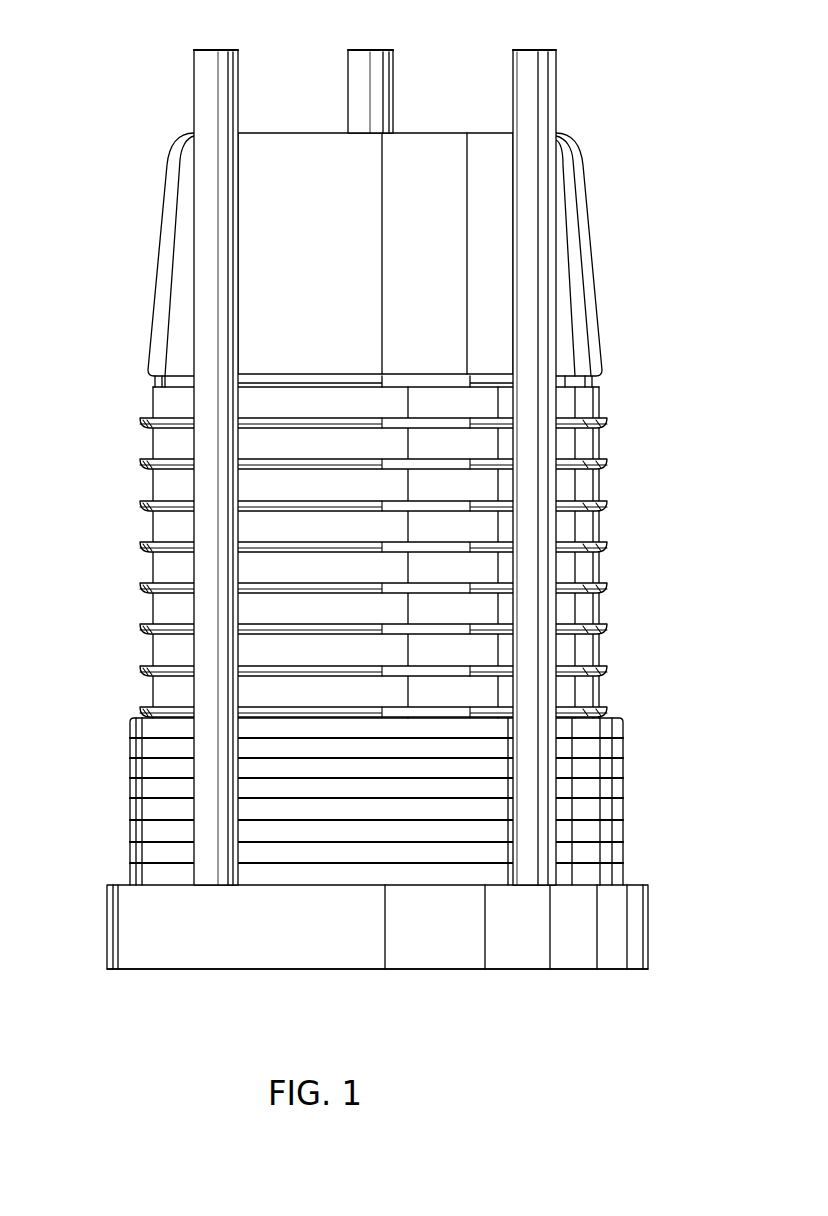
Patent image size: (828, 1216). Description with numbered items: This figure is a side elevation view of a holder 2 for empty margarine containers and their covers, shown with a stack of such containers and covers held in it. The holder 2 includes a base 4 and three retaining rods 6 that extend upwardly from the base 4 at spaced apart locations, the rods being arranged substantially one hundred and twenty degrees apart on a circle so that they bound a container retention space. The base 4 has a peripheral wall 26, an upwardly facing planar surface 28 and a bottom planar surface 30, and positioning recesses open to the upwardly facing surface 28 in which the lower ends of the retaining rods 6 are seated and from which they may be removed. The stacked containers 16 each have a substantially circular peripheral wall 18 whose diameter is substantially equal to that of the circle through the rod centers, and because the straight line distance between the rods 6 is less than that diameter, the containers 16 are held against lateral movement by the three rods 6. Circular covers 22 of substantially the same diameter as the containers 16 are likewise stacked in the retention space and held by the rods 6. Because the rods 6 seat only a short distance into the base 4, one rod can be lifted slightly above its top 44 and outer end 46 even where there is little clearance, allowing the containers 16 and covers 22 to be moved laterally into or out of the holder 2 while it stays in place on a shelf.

The holder 2 is at (382, 914).
The base 4 is at (113, 885).
The retaining rods 6 is at (369, 446).
The containers 16 is at (600, 331).
The peripheral wall 18 is at (586, 252).
The circular covers 22 is at (130, 768).
The peripheral wall 26 is at (108, 927).
The upwardly facing planar surface 28 is at (627, 885).
The bottom planar surface 30 is at (367, 970).
The top 44 is at (305, 80).
The outer ends 46 is at (210, 50).